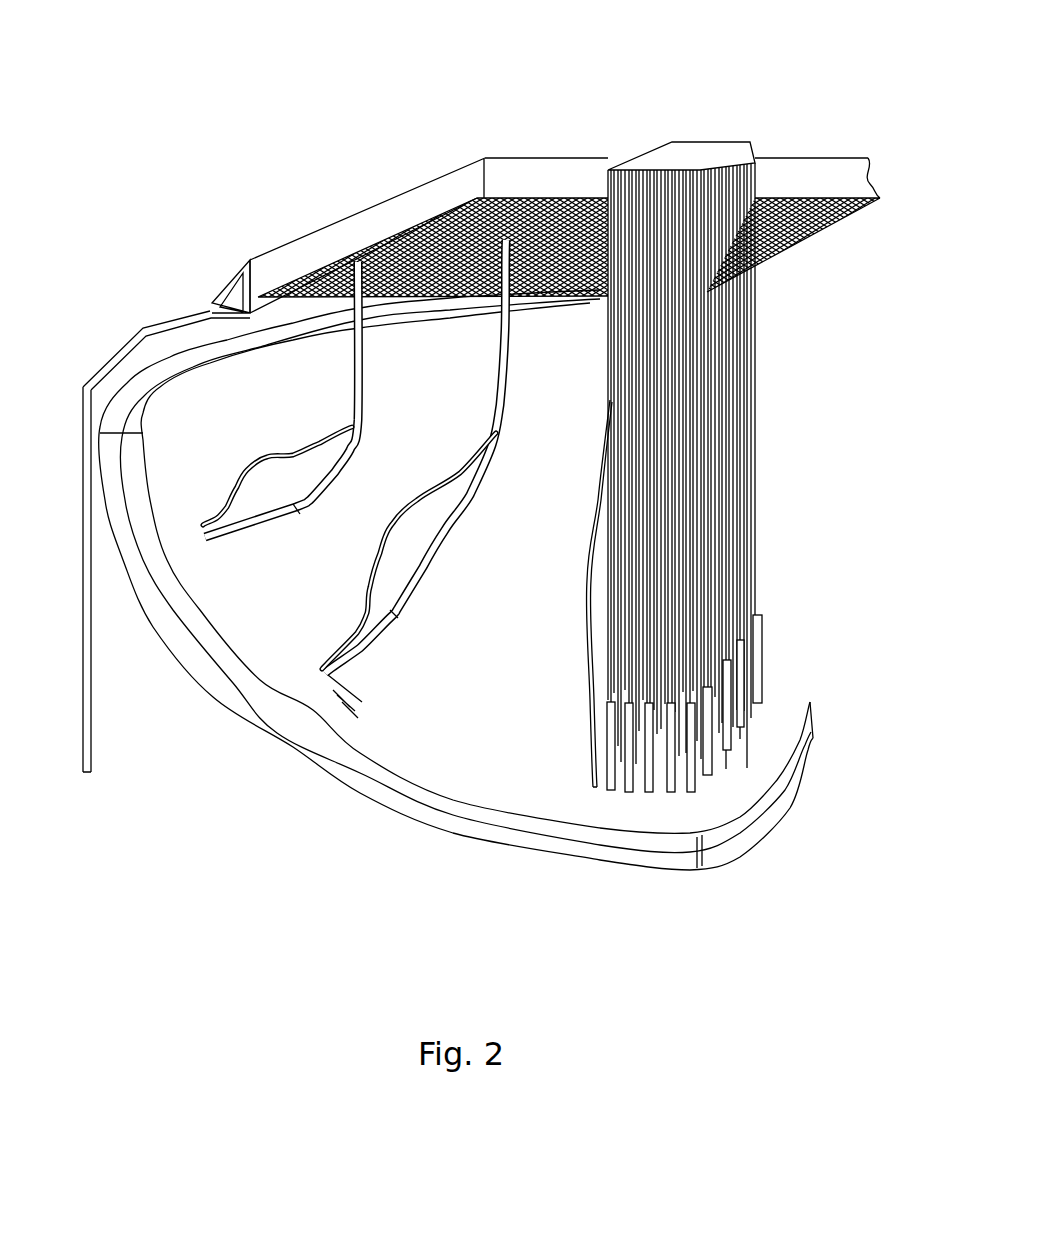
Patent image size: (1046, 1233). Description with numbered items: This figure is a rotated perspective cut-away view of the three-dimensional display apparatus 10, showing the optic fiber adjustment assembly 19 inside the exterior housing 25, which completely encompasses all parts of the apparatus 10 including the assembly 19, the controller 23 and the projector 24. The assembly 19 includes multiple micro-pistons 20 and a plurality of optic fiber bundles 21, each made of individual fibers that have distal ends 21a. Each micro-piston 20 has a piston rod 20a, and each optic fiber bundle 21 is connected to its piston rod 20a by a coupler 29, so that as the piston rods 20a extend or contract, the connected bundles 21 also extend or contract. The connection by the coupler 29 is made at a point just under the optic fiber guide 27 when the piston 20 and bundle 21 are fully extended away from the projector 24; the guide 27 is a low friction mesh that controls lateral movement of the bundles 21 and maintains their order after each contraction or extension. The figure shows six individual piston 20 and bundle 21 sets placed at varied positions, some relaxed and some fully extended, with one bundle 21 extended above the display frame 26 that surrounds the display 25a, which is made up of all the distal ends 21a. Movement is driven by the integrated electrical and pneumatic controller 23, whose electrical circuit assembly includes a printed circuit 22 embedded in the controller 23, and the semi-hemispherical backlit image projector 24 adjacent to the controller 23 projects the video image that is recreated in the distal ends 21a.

The three-dimensional display apparatus 10 is at (357, 167).
The optic fiber adjustment assembly 19 is at (208, 478).
The micro-piston 20 is at (763, 665).
The piston rod 20a is at (760, 570).
The optic fiber bundle 21 is at (592, 785).
The distal ends 21a is at (707, 140).
The printed circuit 22 is at (333, 710).
The controller 23 is at (277, 730).
The semi-hemispherical backlit image projector 24 is at (213, 697).
The exterior housing 25 is at (143, 328).
The display 25a is at (668, 140).
The display frame 26 is at (297, 237).
The optic fiber guide 27 is at (475, 198).
The coupler 29 is at (350, 420).